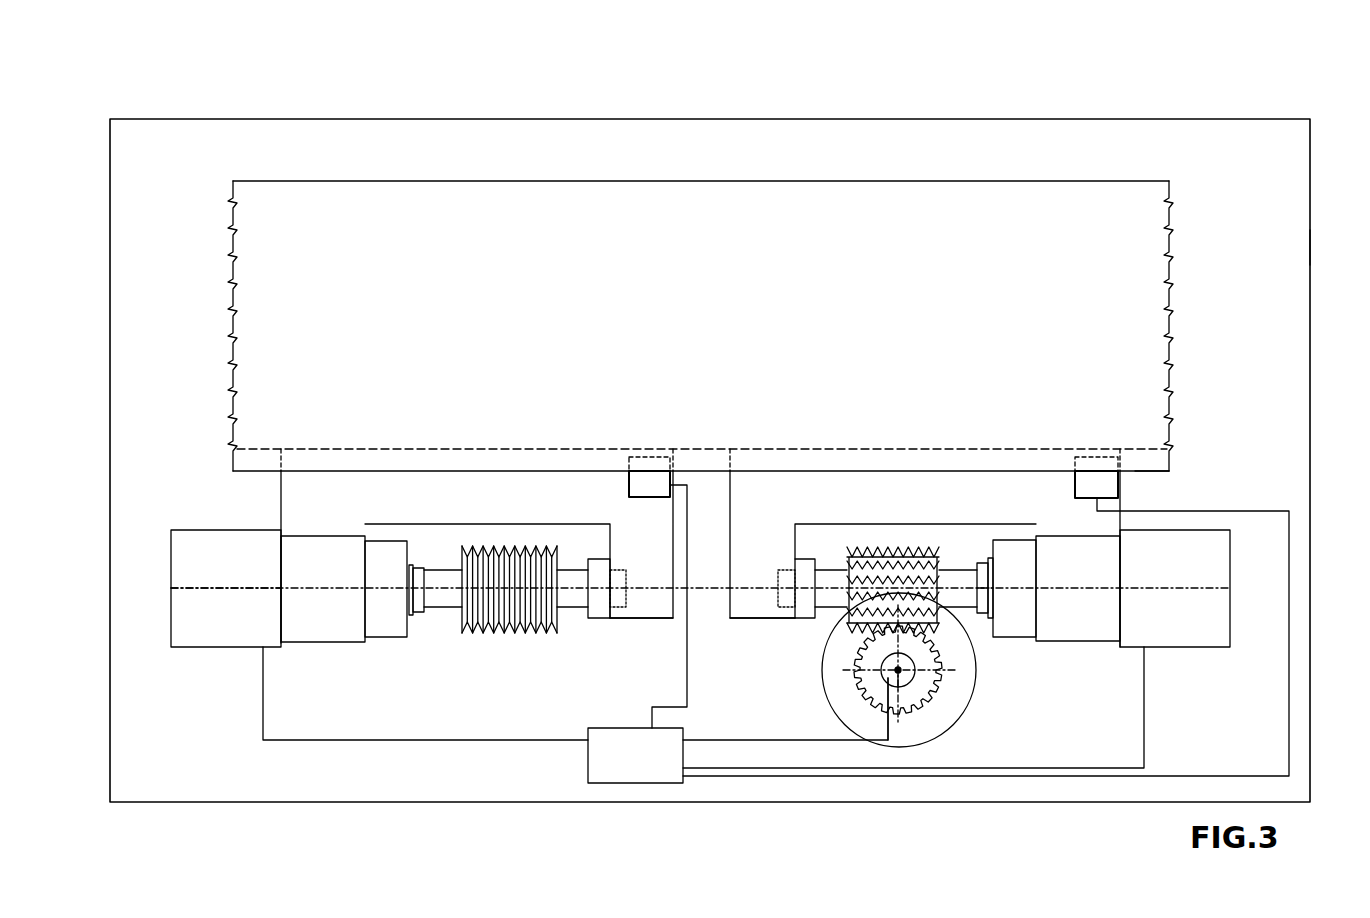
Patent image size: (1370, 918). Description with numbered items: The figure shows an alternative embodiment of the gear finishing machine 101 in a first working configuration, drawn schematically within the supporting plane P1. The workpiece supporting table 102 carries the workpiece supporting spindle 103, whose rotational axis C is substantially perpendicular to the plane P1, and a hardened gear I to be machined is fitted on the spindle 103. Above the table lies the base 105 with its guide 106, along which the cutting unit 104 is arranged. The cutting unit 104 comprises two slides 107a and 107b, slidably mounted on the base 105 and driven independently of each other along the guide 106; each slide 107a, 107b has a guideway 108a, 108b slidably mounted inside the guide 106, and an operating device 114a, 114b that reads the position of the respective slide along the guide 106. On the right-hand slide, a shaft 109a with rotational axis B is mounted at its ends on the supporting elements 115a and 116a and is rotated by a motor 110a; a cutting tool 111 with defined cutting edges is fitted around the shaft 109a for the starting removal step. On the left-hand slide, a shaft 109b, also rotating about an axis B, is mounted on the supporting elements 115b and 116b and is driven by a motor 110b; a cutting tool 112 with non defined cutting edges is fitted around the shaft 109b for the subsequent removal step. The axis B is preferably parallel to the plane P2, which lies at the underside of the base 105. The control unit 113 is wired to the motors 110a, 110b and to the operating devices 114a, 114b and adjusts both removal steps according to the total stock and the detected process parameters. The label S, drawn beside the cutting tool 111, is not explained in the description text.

The machine 101 is at (1210, 112).
The workpiece supporting table 102 is at (833, 686).
The workpiece supporting spindle 103 is at (905, 672).
The cutting unit 104 is at (763, 397).
The base 105 is at (1100, 213).
The guide 106 is at (264, 452).
The slide 107a is at (476, 548).
The slide 107b is at (913, 555).
The guideway 108a is at (930, 460).
The guideway 108b is at (620, 462).
The shaft 109a is at (823, 603).
The shaft 109b is at (570, 603).
The motor 110a is at (1178, 637).
The motor 110b is at (218, 637).
The cutting tool with defined cutting edges 111 is at (943, 610).
The cutting tool with non defined cutting edges 112 is at (520, 627).
The control unit 113 is at (622, 735).
The operating device 114a is at (1075, 485).
The operating device 114b is at (633, 484).
The supporting element 115a is at (733, 598).
The supporting element 115b is at (661, 610).
The supporting element 116a is at (1085, 633).
The supporting element 116b is at (318, 630).
The rotational axis B is at (205, 588).
The rotational axis C is at (903, 674).
The gear I is at (918, 706).
The supporting plane P1 is at (1295, 258).
The plane P2 is at (1135, 474).
The shaft S is at (980, 650).